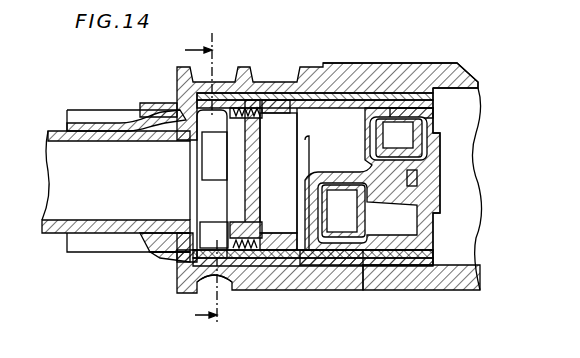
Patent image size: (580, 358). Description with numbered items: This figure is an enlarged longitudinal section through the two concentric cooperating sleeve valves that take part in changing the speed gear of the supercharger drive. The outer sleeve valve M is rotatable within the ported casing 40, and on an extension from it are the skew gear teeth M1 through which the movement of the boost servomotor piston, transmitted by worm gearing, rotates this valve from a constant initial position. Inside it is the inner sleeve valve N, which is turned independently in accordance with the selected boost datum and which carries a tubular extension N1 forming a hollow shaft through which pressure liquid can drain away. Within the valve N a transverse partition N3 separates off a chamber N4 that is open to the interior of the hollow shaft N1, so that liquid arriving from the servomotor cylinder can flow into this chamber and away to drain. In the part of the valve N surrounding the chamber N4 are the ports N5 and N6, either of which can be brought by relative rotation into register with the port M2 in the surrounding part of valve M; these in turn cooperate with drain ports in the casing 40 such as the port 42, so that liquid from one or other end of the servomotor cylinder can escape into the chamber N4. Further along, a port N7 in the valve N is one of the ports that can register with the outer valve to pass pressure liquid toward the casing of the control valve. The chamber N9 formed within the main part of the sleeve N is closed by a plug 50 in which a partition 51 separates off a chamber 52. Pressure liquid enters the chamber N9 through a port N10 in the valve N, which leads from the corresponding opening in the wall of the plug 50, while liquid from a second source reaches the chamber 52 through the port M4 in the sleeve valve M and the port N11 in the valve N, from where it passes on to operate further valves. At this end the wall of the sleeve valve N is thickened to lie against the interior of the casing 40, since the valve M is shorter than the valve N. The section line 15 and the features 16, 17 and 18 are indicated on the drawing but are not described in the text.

The outer sleeve valve M is at (180, 78).
The skew gear teeth M1 is at (113, 112).
The port M2 is at (187, 264).
The port M4 is at (365, 288).
The inner sleeve valve N is at (288, 232).
The tubular extension N1 is at (70, 221).
The transverse partition N3 is at (182, 233).
The chamber N4 is at (215, 185).
The port N5 is at (181, 121).
The port N6 is at (178, 256).
The port N7 is at (270, 95).
The chamber N9 is at (360, 137).
The port N10 is at (407, 133).
The port N11 is at (343, 205).
The section line 15 is at (205, 179).
The cylinder 16 is at (276, 130).
The ring 17 is at (337, 122).
The ring band 18 is at (395, 108).
The ported casing 40 is at (422, 65).
The port 42 is at (238, 266).
The plug 50 is at (443, 146).
The partition 51 is at (323, 170).
The chamber 52 is at (415, 202).